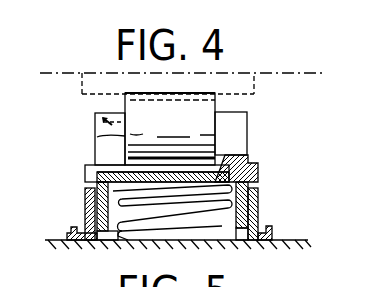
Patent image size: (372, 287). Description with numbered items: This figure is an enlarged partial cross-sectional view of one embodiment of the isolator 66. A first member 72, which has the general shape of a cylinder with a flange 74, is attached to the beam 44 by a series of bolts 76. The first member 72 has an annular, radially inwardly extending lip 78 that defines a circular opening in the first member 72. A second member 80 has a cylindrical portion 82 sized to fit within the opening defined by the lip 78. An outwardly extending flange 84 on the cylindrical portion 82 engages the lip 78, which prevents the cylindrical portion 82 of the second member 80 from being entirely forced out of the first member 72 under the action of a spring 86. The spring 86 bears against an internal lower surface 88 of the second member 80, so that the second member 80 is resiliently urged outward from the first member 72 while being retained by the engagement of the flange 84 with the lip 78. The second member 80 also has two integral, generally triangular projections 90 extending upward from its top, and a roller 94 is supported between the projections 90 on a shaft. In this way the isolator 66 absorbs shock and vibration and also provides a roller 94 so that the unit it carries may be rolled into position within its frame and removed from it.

The beam 44 is at (286, 242).
The isolator 66 is at (280, 173).
The first member 72 is at (256, 214).
The flange 74 is at (272, 234).
The bolts 76 is at (72, 230).
The lip 78 is at (84, 194).
The second member 80 is at (85, 172).
The cylindrical portion 82 is at (258, 186).
The outwardly extending flange 84 is at (237, 241).
The spring 86 is at (106, 241).
The internal lower surface 88 is at (241, 160).
The projections 90 is at (96, 113).
The roller 94 is at (96, 138).